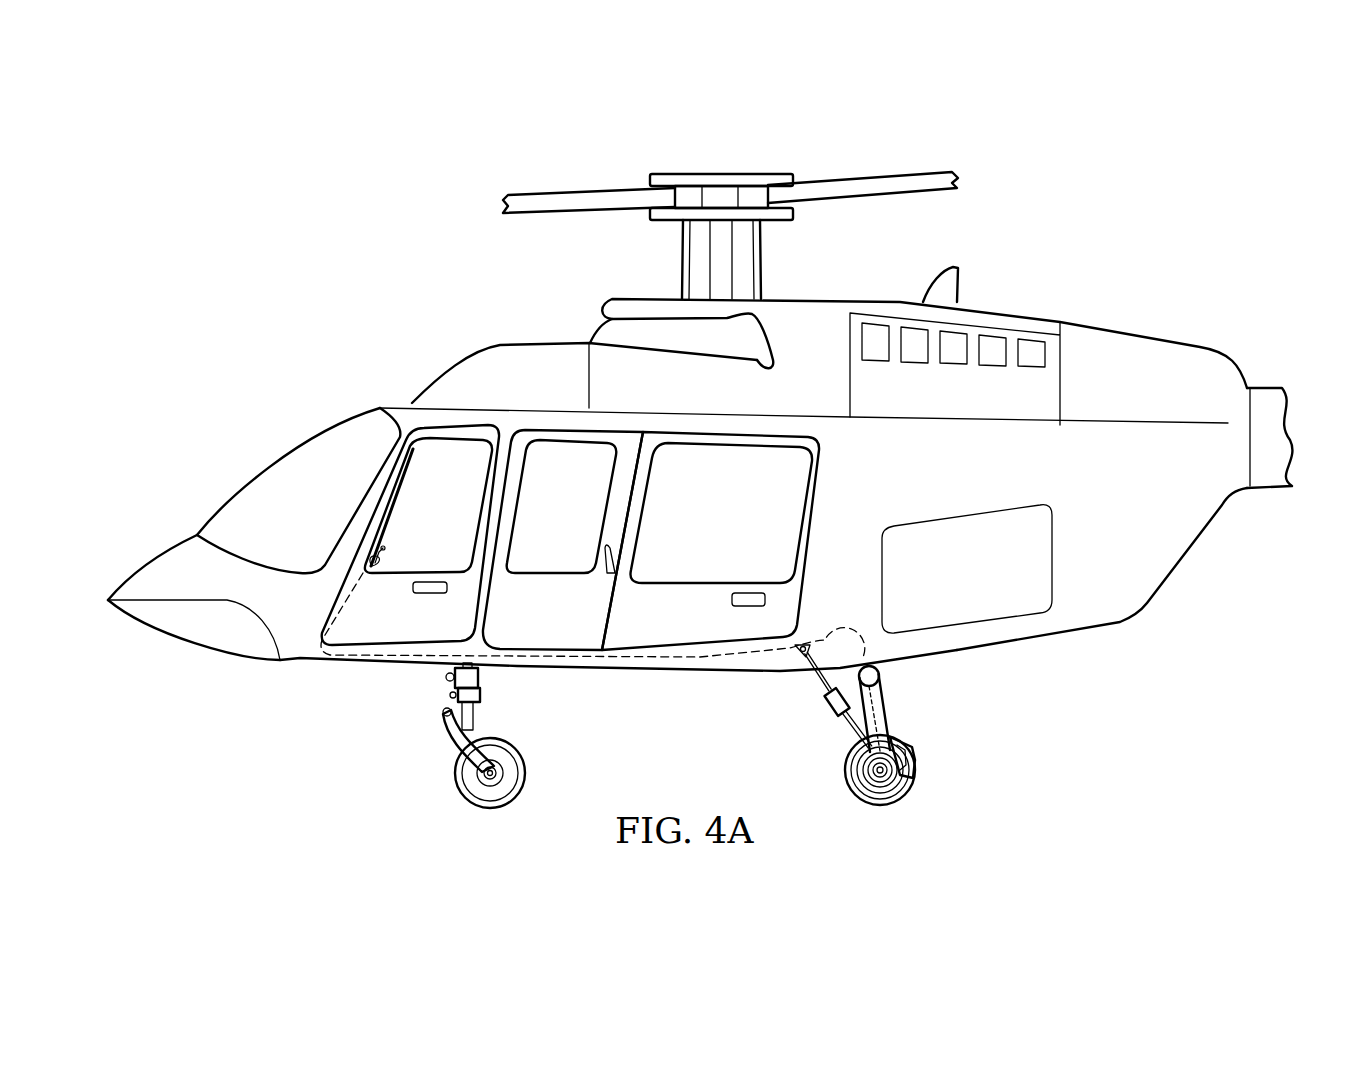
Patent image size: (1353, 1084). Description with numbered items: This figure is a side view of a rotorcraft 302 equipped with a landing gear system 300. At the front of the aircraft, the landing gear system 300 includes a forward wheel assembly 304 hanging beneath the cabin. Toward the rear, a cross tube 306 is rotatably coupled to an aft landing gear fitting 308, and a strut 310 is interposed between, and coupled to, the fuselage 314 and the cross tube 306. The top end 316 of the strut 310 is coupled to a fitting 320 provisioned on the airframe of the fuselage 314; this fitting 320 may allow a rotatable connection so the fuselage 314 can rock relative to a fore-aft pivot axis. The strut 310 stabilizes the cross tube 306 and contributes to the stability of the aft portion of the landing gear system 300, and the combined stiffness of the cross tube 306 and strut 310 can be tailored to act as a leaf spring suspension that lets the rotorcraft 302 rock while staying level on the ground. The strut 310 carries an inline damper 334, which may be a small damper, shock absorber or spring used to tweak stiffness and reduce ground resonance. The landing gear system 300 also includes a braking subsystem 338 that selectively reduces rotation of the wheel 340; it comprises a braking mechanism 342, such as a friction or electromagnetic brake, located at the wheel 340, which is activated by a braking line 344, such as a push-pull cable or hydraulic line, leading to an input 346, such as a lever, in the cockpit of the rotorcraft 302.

The landing gear system 300 is at (436, 784).
The rotorcraft 302 is at (1110, 200).
The forward wheel assembly 304 is at (442, 728).
The cross tube 306 is at (884, 712).
The aft landing gear fitting 308 is at (882, 678).
The strut 310 is at (822, 690).
The fuselage 314 is at (1145, 548).
The top end 316 is at (812, 680).
The fitting 320 is at (806, 645).
The inline damper 334 is at (836, 733).
The braking subsystem 338 is at (918, 768).
The wheel 340 is at (883, 805).
The braking mechanism 342 is at (912, 748).
The braking line 344 is at (350, 652).
The input 346 is at (382, 556).